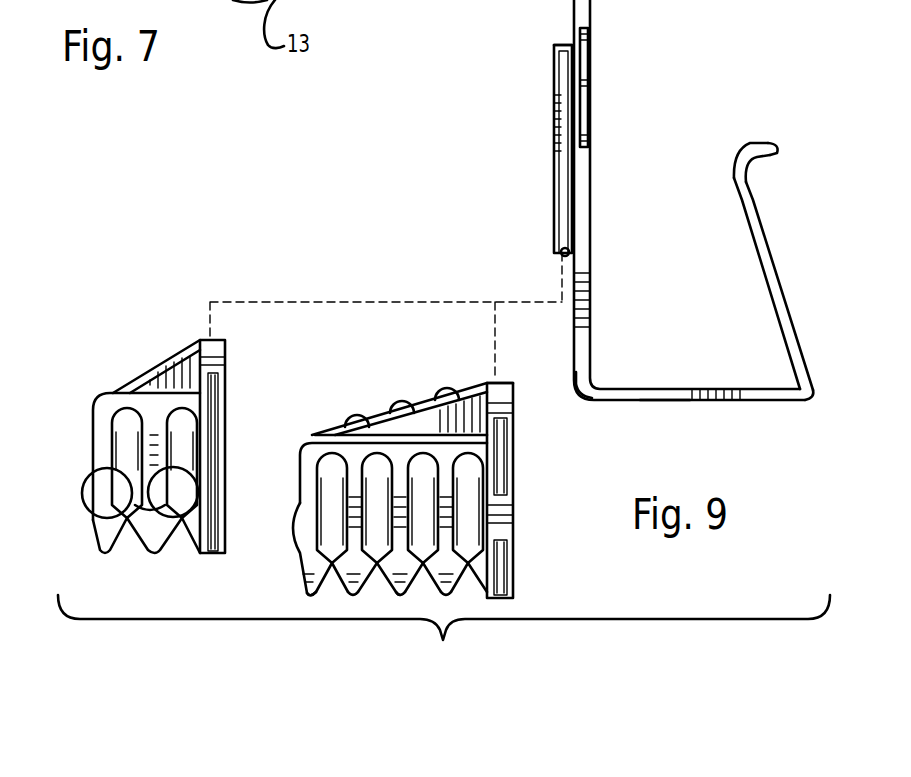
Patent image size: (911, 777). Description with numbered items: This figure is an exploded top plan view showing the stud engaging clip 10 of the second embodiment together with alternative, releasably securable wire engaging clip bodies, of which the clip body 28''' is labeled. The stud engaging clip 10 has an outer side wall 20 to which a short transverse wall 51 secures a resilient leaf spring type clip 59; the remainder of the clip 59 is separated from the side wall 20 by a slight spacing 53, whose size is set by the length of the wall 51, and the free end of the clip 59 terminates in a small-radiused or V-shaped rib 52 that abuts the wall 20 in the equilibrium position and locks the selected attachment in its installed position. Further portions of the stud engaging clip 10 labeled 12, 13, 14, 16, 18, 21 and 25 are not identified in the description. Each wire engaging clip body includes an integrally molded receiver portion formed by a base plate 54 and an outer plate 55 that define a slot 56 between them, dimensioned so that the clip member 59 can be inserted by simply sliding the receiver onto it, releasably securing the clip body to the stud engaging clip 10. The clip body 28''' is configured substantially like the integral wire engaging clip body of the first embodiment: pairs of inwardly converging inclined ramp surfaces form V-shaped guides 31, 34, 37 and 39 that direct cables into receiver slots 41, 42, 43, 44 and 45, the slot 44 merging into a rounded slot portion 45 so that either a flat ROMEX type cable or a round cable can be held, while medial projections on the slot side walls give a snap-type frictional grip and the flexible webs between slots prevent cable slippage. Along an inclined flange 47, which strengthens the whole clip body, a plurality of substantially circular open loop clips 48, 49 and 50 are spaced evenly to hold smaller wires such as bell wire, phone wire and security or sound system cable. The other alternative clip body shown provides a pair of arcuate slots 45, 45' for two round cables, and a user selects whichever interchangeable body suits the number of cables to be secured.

The stud engaging clip 10 is at (440, 100).
The base leg of hanger bracket 12 is at (648, 401).
The bend of hanger bracket 13 is at (808, 401).
The inclined leg of hanger bracket 14 is at (793, 280).
The hook bend 16 is at (755, 160).
The hook tip 18 is at (780, 143).
The side wall 20 is at (590, 185).
The lower bend of upright leg 21 is at (592, 390).
The retaining clip 25 is at (583, 50).
The wire engaging clip body 28''' is at (264, 416).
The V-shaped guide 31 is at (468, 590).
The V-shaped guide 34 is at (423, 590).
The V-shaped guide 37 is at (378, 590).
The V-shaped guide 39 is at (333, 590).
The receiver slot 41 is at (405, 558).
The receiver slot 42 is at (475, 522).
The receiver slot 43 is at (470, 500).
The receiver slot 44 is at (330, 470).
The rounded slot portion 45 is at (165, 503).
The rounded finger end 45' is at (99, 524).
The inclined flange 47 is at (487, 390).
The open loop clip 48 is at (452, 378).
The open loop clip 49 is at (400, 392).
The open loop clip 50 is at (350, 410).
The transverse wall 51 is at (556, 45).
The rib 52 is at (561, 254).
The spacing 53 is at (557, 117).
The base plate 54 is at (192, 375).
The outer plate 55 is at (214, 345).
The slot 56 is at (212, 386).
The resilient leaf spring type clip 59 is at (556, 175).